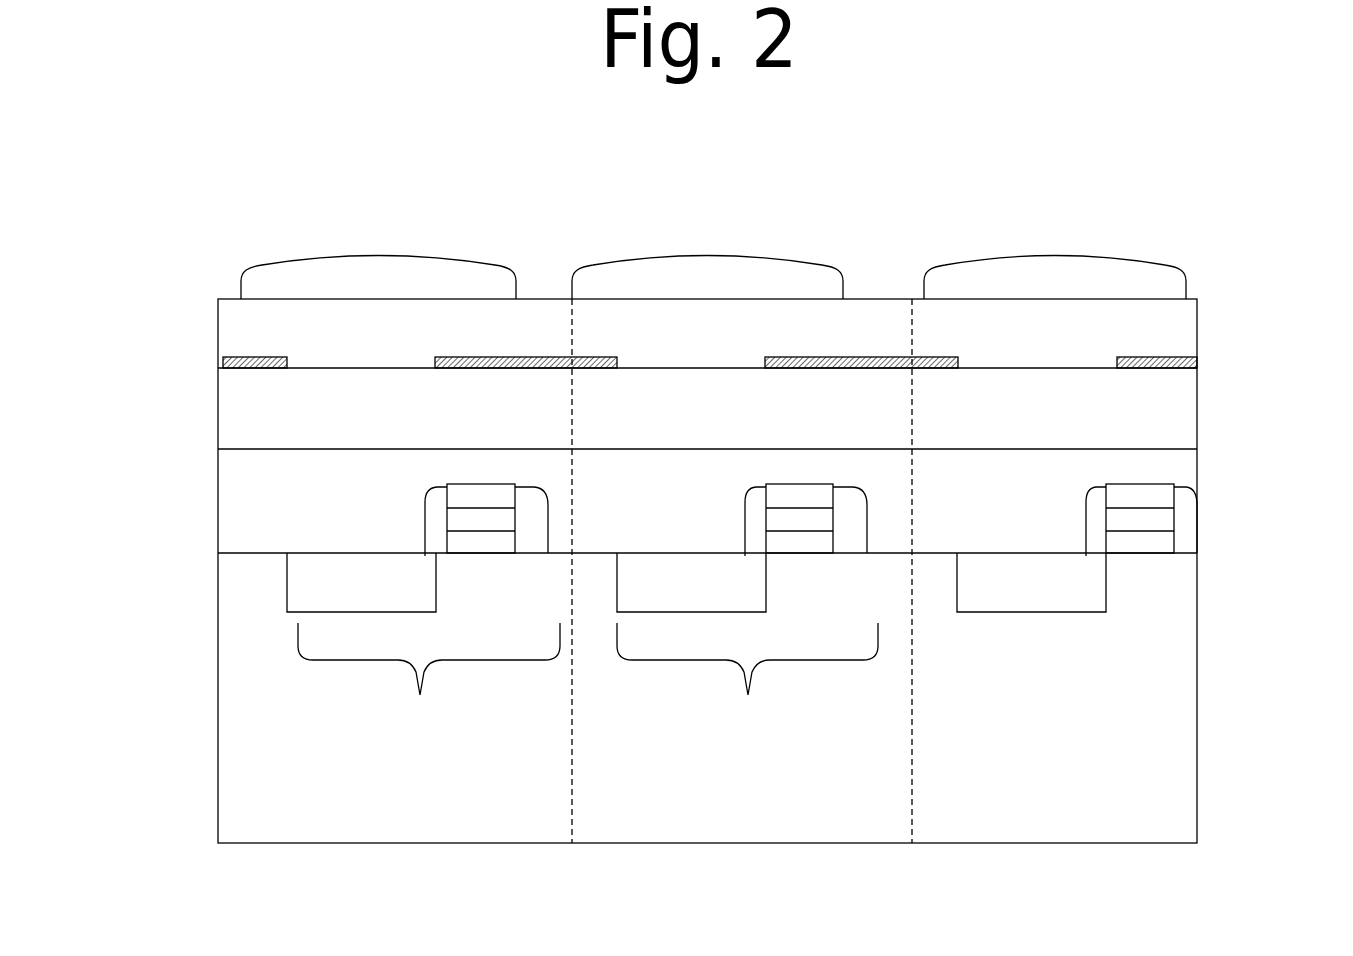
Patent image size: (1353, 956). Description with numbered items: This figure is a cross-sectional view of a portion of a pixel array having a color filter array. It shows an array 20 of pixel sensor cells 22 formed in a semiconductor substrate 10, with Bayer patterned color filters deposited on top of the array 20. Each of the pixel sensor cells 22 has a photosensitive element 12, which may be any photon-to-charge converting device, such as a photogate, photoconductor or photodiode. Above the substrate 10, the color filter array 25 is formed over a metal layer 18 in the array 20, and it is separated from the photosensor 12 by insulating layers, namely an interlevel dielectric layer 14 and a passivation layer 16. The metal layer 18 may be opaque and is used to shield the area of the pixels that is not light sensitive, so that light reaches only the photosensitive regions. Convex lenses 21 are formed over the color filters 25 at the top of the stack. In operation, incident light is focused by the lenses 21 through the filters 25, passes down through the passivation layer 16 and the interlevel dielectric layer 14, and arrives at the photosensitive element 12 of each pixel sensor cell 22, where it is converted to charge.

The semiconductor substrate 10 is at (1089, 796).
The photosensitive element 12 is at (385, 597).
The interlevel dielectric layer 14 is at (304, 507).
The passivation layer 16 is at (292, 427).
The metal layer 18 is at (222, 362).
The array of pixel sensor cells 20 is at (172, 158).
The convex lenses 21 is at (447, 263).
The pixel sensor cells 22 is at (588, 681).
The color filter array 25 is at (372, 356).